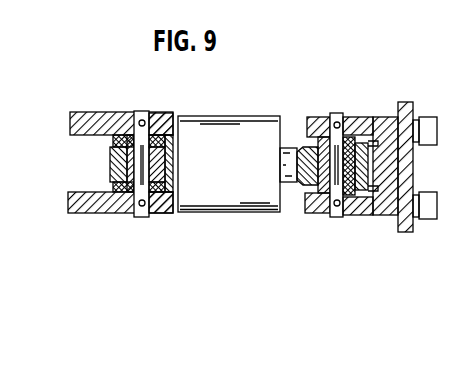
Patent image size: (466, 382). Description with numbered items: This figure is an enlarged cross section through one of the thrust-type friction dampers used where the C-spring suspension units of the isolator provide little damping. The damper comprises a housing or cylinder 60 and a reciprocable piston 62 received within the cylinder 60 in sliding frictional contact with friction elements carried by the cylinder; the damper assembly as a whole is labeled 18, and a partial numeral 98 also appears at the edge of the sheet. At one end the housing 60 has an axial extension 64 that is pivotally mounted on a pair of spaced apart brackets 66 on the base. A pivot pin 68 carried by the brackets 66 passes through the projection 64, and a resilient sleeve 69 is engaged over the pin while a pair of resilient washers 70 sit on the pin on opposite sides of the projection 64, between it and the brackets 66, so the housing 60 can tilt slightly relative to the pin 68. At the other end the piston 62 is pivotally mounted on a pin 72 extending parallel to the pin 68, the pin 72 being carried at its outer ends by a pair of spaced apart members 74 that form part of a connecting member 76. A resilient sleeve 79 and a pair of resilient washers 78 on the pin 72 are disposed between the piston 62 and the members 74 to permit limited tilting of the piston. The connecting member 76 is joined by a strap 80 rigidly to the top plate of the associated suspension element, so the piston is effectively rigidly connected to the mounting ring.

The spindle assembly 18 is at (254, 177).
The housing 60 is at (233, 212).
The piston 62 is at (288, 147).
The axial extension 64 is at (110, 161).
The brackets 66 is at (107, 100).
The pivot pin 68 is at (142, 217).
The resilient sleeve 69 is at (155, 163).
The resilient washers 70 is at (113, 140).
The pin 72 is at (339, 217).
The spaced apart members 74 is at (320, 107).
The connecting member 76 is at (343, 92).
The resilient washers 78 is at (366, 117).
The resilient sleeve 79 is at (301, 187).
The strap 80 is at (404, 232).
The element 98 is at (368, 376).